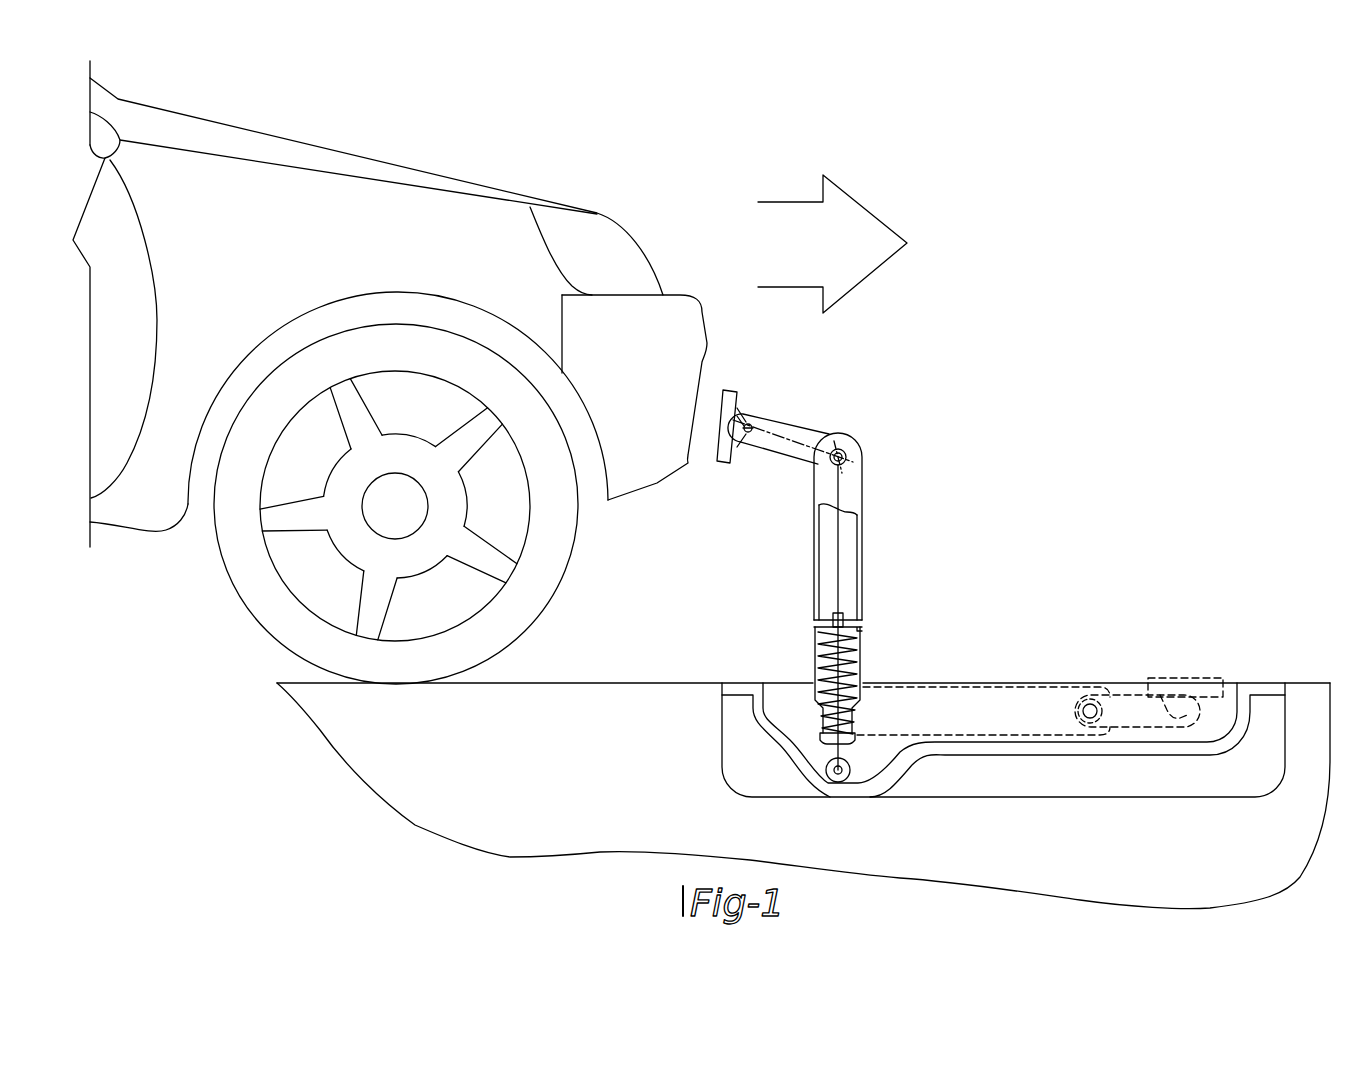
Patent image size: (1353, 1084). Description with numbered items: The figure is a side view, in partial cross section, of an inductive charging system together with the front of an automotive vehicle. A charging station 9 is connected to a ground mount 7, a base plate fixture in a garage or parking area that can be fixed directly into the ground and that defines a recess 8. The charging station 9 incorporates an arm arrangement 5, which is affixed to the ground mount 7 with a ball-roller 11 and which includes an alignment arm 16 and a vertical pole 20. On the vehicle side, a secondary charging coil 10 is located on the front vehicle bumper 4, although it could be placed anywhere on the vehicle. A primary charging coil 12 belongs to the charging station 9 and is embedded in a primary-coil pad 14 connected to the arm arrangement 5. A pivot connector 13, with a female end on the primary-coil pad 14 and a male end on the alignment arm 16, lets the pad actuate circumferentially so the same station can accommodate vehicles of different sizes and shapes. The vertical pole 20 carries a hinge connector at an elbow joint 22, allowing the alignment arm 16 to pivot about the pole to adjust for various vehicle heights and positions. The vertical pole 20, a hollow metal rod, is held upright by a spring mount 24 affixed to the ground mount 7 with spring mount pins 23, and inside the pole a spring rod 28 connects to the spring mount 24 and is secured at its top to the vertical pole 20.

The front vehicle bumper 4 is at (680, 286).
The secondary charging coil 10 is at (671, 419).
The primary charging coil 12 is at (698, 447).
The primary-coil pad 14 is at (736, 383).
The pivot connector 13 is at (742, 407).
The charging station 9 is at (857, 556).
The alignment arm 16 is at (795, 432).
The elbow joint 22 is at (826, 467).
The arm arrangement 5 is at (853, 601).
The vertical pole 20 is at (864, 537).
The spring mount pins 23 is at (845, 620).
The spring mount 24 is at (830, 604).
The spring rod 28 is at (863, 640).
The ball-roller 11 is at (851, 770).
The ground mount 7 is at (1003, 687).
The recess 8 is at (1207, 728).